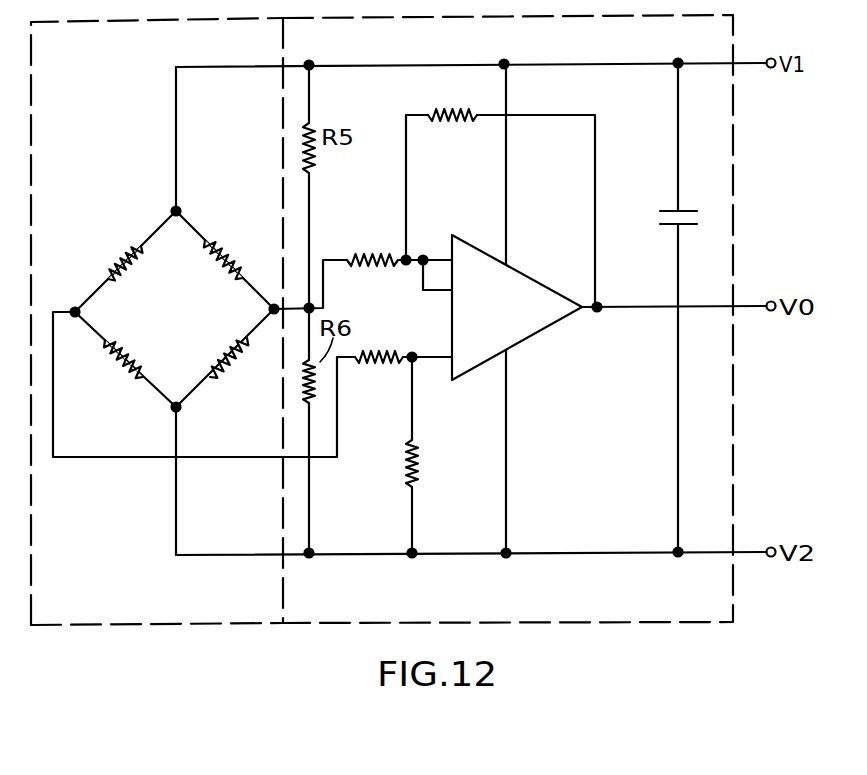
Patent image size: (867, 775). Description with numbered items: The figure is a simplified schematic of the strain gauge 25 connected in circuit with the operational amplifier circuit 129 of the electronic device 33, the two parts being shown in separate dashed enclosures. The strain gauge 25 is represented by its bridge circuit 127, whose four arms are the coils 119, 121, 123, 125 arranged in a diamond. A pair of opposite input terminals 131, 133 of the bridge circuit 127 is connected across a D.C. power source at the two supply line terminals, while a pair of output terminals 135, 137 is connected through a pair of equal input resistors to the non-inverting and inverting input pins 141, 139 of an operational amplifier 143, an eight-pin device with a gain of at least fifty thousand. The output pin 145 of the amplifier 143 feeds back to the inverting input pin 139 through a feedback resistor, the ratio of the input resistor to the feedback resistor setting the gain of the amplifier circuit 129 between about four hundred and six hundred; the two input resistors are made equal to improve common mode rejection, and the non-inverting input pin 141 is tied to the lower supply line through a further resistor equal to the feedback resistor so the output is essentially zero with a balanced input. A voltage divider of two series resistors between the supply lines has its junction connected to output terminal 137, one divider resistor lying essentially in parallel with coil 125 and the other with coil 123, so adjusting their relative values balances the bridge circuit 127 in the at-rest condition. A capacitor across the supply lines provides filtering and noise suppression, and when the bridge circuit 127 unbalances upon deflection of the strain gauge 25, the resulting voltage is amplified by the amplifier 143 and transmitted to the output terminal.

The strain gauge 25 is at (112, 625).
The electronic device 33 is at (335, 625).
The bridge circuit 127 is at (161, 271).
The coil 119 is at (117, 256).
The coil 121 is at (148, 333).
The coil 123 is at (223, 355).
The coil 125 is at (223, 252).
The input terminal 131 is at (180, 209).
The input terminal 133 is at (172, 408).
The output terminal 135 is at (74, 308).
The output terminal 137 is at (272, 305).
The operational amplifier circuit 129 is at (536, 308).
The inverting input pin 139 is at (450, 257).
The non-inverting input pin 141 is at (446, 364).
The operational amplifier 143 is at (522, 326).
The output pin 145 is at (582, 302).